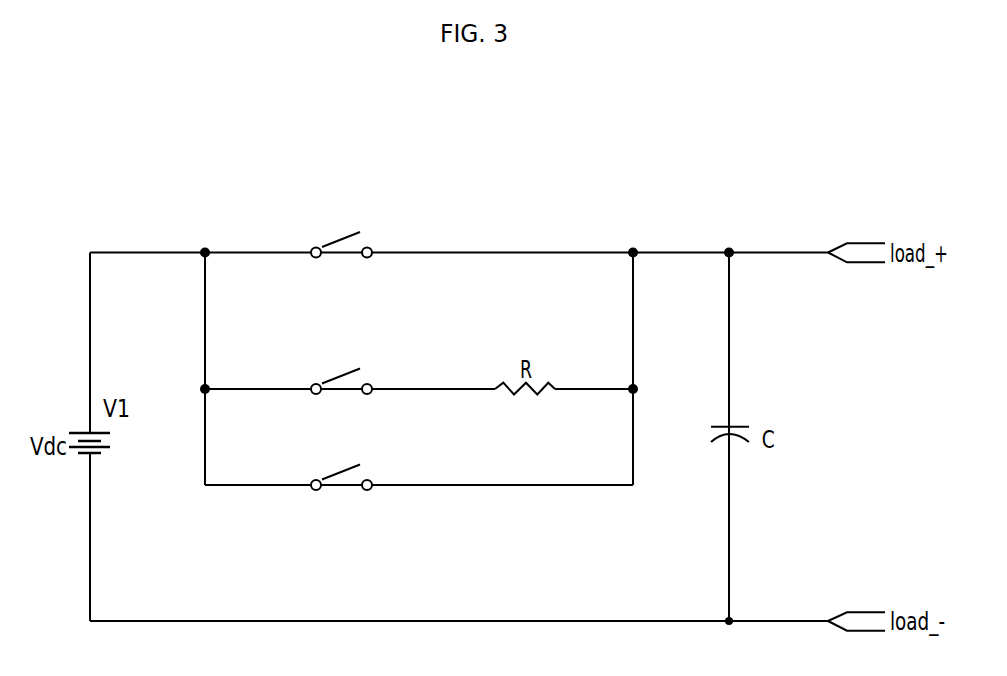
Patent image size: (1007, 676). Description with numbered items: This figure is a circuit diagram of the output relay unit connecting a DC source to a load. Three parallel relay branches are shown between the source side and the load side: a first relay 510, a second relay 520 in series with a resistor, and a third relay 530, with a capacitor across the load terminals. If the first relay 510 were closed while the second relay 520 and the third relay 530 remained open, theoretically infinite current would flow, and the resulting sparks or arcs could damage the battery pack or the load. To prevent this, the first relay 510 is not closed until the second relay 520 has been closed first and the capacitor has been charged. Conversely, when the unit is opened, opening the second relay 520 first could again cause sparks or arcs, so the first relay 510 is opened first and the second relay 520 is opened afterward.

The first relay 510 is at (338, 242).
The second relay 520 is at (338, 378).
The third relay 530 is at (338, 474).